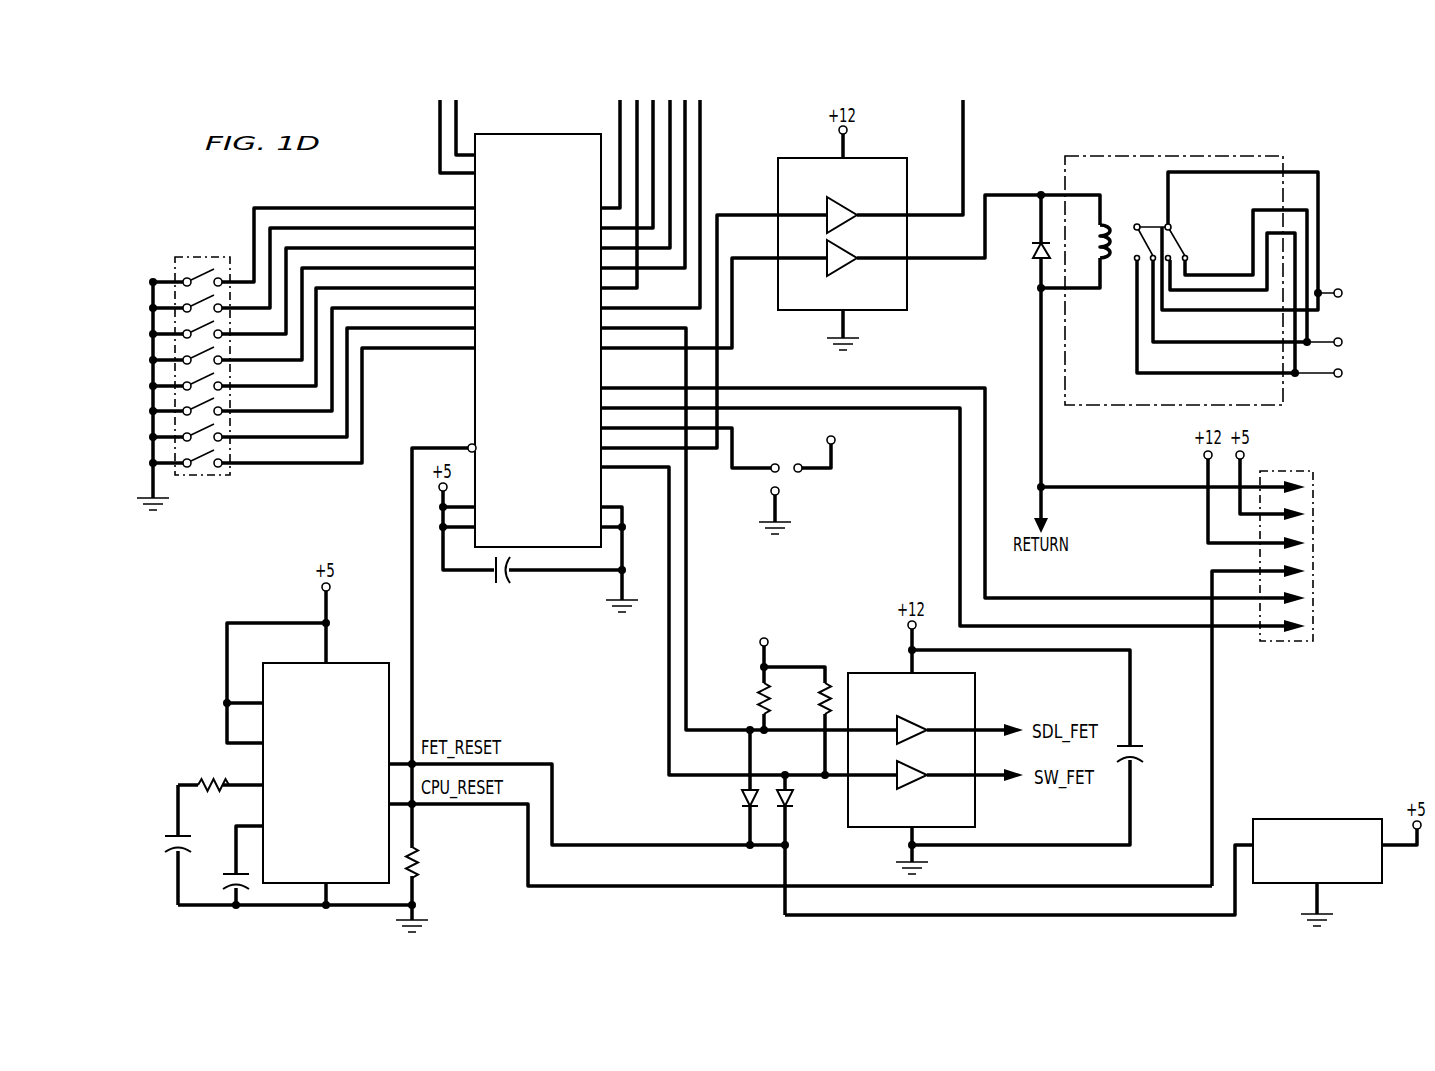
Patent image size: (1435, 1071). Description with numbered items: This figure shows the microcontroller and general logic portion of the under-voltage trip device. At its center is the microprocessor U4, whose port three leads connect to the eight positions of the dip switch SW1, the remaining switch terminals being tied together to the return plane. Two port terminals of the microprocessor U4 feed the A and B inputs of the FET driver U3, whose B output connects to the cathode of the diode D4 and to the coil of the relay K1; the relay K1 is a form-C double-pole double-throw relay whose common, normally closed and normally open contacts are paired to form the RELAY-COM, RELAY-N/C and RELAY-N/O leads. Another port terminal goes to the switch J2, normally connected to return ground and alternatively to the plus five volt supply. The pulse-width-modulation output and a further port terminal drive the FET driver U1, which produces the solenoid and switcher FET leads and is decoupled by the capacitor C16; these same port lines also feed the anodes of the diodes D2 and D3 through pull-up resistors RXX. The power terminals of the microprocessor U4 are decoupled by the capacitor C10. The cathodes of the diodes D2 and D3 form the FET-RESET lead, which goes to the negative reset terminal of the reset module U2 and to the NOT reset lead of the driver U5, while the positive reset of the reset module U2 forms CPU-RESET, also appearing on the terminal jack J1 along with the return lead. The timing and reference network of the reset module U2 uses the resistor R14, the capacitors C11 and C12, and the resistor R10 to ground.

The microprocessor U4 is at (534, 327).
The dip switch SW1 is at (306, 359).
The FET driver U3 is at (842, 222).
The diode D4 is at (1027, 341).
The relay K1 is at (1248, 267).
The terminal jack J1 is at (1331, 543).
The switch J2 is at (799, 473).
The capacitor C10 is at (497, 579).
The pull-up resistors RXX is at (777, 694).
The FET driver U1 is at (911, 737).
The capacitor C16 is at (1148, 743).
The diode D2 is at (734, 787).
The diode D3 is at (800, 845).
The reset module U2 is at (326, 760).
The resistor R14 is at (220, 773).
The capacitor C11 is at (196, 845).
The capacitor C12 is at (226, 865).
The resistor R10 is at (431, 876).
The driver U5 is at (1317, 837).